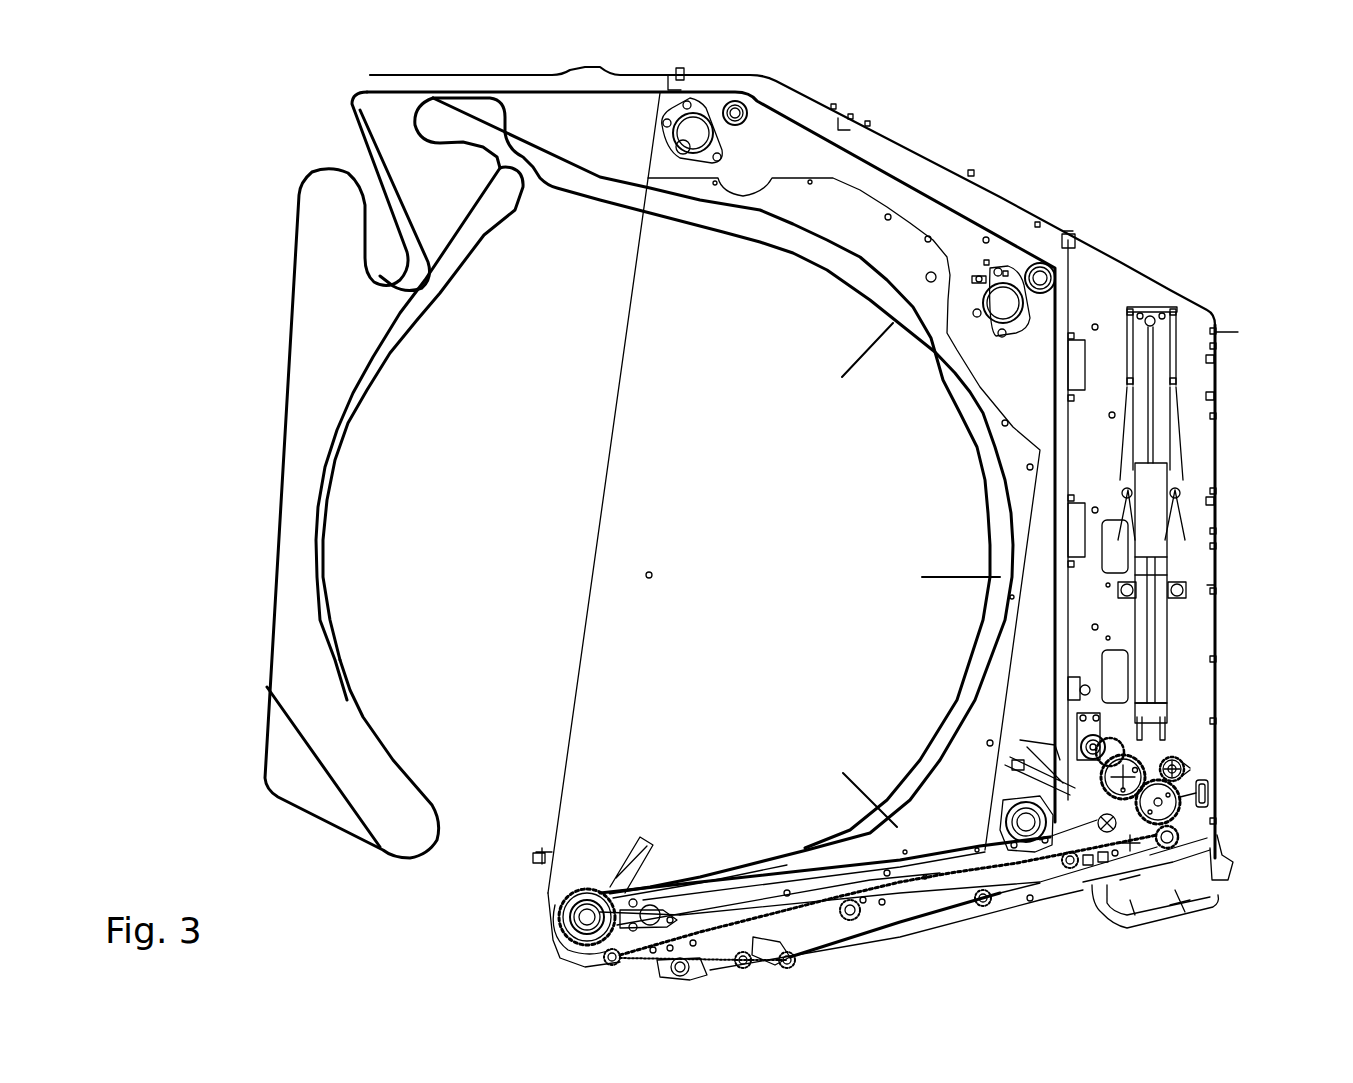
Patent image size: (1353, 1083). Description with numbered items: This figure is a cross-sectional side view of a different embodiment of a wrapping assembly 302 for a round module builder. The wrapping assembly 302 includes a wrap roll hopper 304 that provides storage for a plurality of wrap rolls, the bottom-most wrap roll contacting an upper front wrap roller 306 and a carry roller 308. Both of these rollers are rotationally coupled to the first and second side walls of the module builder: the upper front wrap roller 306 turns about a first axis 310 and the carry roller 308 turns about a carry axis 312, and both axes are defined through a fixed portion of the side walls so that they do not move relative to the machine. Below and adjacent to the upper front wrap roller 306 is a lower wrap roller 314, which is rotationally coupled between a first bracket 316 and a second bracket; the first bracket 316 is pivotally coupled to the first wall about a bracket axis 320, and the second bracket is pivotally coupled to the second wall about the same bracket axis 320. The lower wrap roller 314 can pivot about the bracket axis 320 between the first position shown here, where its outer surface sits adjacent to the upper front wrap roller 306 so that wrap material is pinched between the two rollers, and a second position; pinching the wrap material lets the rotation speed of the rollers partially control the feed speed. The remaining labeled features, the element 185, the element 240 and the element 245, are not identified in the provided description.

The bale forming chamber 185 is at (424, 562).
The roller 240 is at (1003, 823).
The roller 245 is at (560, 903).
The wrapping assembly 302 is at (1150, 260).
The wrap roll hopper 304 is at (1180, 622).
The upper front wrap roller 306 is at (1140, 757).
The carry roller 308 is at (1168, 757).
The first axis 310 is at (1075, 742).
The carry axis 312 is at (1185, 763).
The lower wrap roller 314 is at (1183, 813).
The first bracket 316 is at (1212, 787).
The bracket axis 320 is at (1187, 907).